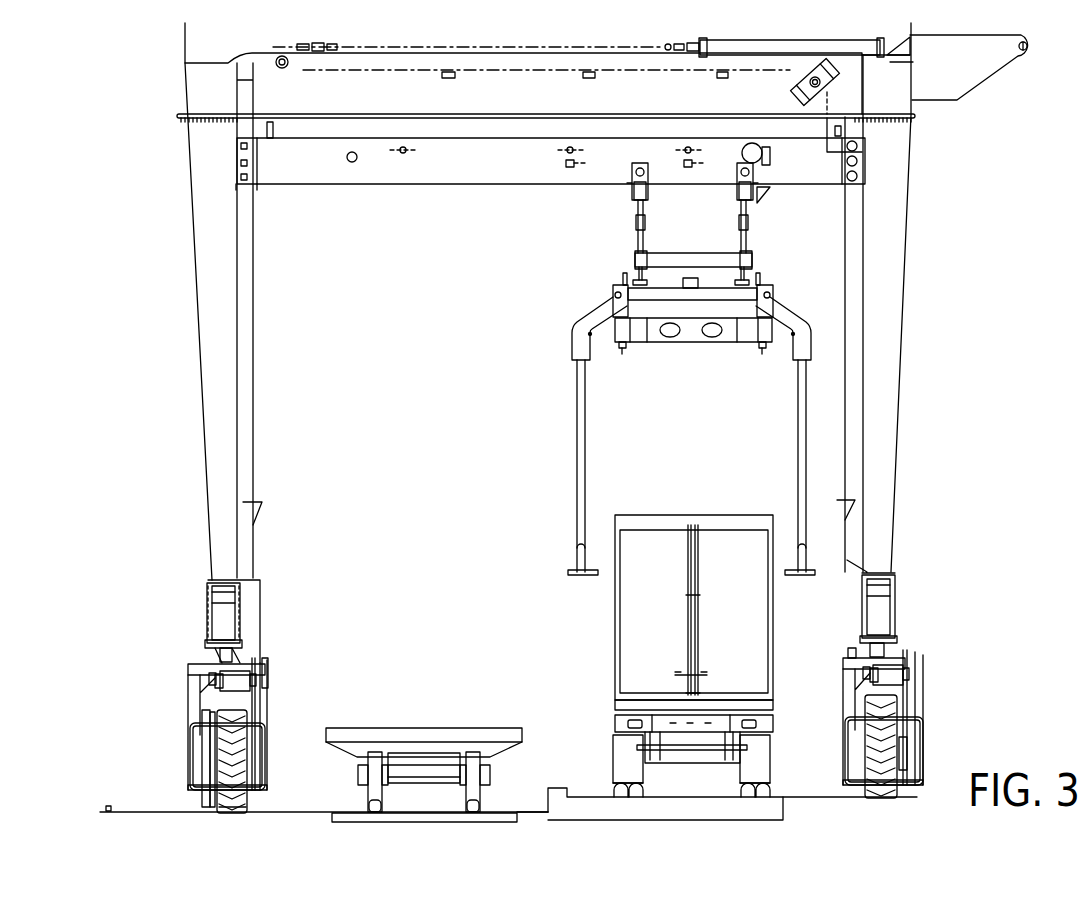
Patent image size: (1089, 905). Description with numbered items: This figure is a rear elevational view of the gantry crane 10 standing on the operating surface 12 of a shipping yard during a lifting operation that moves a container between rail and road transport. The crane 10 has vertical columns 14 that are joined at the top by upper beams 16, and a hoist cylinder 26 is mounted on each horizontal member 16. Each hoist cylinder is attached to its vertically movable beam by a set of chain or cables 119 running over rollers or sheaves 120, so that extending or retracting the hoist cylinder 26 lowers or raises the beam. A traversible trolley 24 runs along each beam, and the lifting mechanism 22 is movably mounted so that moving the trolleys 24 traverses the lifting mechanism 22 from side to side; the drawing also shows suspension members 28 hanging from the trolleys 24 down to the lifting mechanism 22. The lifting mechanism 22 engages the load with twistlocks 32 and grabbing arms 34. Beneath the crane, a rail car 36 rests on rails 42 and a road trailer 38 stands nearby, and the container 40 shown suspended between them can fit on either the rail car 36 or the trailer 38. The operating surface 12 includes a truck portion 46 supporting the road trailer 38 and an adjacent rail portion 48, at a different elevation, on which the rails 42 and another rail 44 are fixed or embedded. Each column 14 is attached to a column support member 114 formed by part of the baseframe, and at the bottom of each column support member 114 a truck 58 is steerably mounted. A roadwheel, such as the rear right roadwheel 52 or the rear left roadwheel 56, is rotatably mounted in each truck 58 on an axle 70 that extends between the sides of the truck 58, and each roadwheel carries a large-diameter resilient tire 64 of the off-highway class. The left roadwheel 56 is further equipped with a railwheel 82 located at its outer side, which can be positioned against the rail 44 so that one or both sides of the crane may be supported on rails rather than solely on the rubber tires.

The gantry crane 10 is at (980, 173).
The operating surface 12 is at (530, 810).
The vertical column 14 is at (203, 210).
The upper beam 16 is at (502, 64).
The lifting mechanism 22 is at (557, 307).
The traversible trolley 24 is at (637, 205).
The hoist cylinder 26 is at (791, 45).
The hoist rope 28 is at (638, 224).
The twistlock 32 is at (623, 350).
The grabbing arm 34 is at (578, 460).
The rail car 36 is at (405, 728).
The road trailer 38 is at (610, 723).
The container 40 is at (640, 614).
The rail 42 is at (372, 814).
The rail 44 is at (208, 810).
The truck portion 46 is at (800, 797).
The rail portion 48 is at (288, 810).
The rear right roadwheel 52 is at (920, 728).
The rear left roadwheel 56 is at (246, 706).
The truck 58 is at (192, 668).
The tire 64 is at (247, 742).
The axle 70 is at (188, 765).
The railwheel 82 is at (205, 748).
The column support member 114 is at (222, 617).
The chain or cables 119 is at (716, 60).
The rollers or sheaves 120 is at (797, 76).